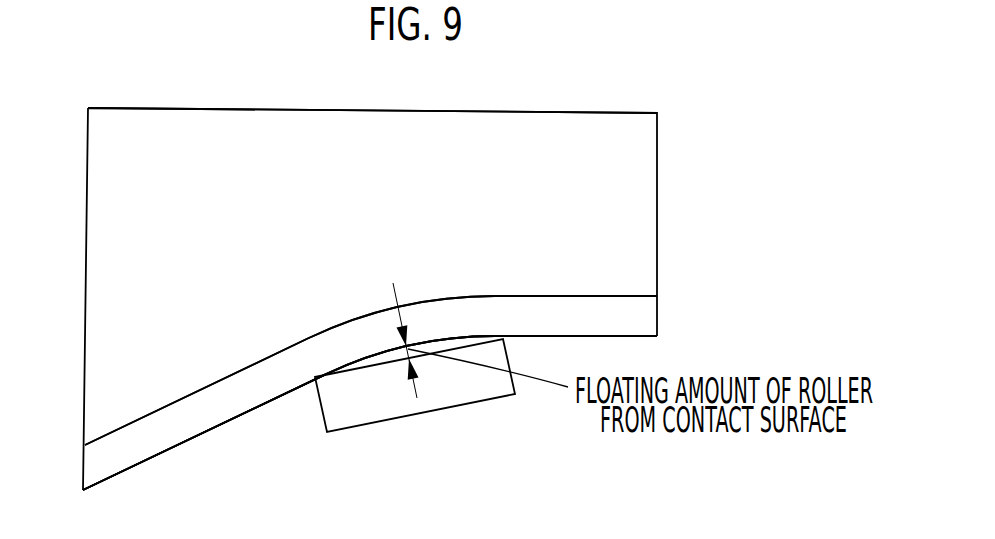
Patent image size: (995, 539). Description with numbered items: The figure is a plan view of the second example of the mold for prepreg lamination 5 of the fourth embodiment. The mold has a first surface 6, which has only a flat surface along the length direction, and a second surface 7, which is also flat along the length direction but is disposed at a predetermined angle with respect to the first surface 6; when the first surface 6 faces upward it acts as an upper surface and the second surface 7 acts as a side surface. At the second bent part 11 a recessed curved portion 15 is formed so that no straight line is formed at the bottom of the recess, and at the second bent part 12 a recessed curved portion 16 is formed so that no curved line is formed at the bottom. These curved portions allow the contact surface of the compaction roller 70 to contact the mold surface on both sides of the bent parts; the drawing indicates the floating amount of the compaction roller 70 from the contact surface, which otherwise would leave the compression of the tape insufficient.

The mold for prepreg lamination 5 is at (645, 222).
The first surface 6 is at (400, 133).
The second surface 7 is at (228, 421).
The second bent part 11 is at (428, 325).
The second bent part 12 is at (416, 280).
The recessed curved portion 15 is at (375, 345).
The recessed curved portion 16 is at (357, 335).
The compaction roller 70 is at (397, 400).